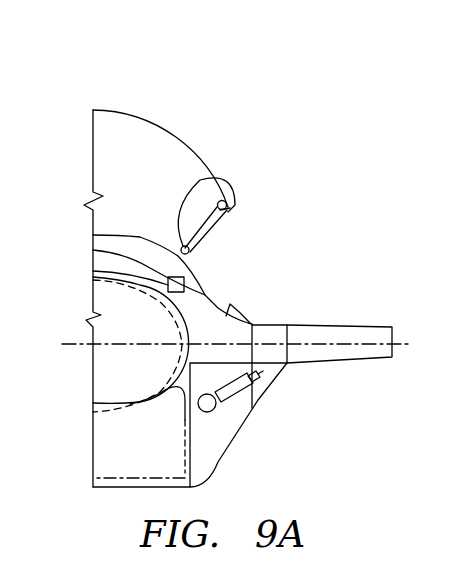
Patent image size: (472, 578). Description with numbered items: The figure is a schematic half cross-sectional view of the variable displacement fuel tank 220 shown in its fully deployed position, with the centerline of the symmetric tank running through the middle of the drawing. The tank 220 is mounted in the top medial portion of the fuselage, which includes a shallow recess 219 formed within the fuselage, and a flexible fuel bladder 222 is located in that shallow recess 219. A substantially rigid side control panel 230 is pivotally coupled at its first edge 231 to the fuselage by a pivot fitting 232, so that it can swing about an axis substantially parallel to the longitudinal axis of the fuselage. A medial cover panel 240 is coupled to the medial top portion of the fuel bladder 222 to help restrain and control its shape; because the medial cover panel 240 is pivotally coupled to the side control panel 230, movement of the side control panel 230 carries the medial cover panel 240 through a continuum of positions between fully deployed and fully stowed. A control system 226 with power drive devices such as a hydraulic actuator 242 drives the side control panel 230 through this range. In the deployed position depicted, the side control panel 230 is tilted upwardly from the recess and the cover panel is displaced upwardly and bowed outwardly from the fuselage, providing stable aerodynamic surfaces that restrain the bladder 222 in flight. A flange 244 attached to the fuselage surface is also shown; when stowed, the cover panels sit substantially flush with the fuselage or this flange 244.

The shallow recess 219 is at (118, 235).
The variable displacement fuel tank 220 is at (218, 84).
The flexible fuel bladder 222 is at (170, 128).
The control system 226 is at (157, 257).
The side control panel 230 is at (223, 217).
The first edge 231 is at (188, 253).
The pivot fitting 232 is at (221, 200).
The medial cover panel 240 is at (118, 110).
The hydraulic actuator 242 is at (97, 250).
The flange 244 is at (243, 310).